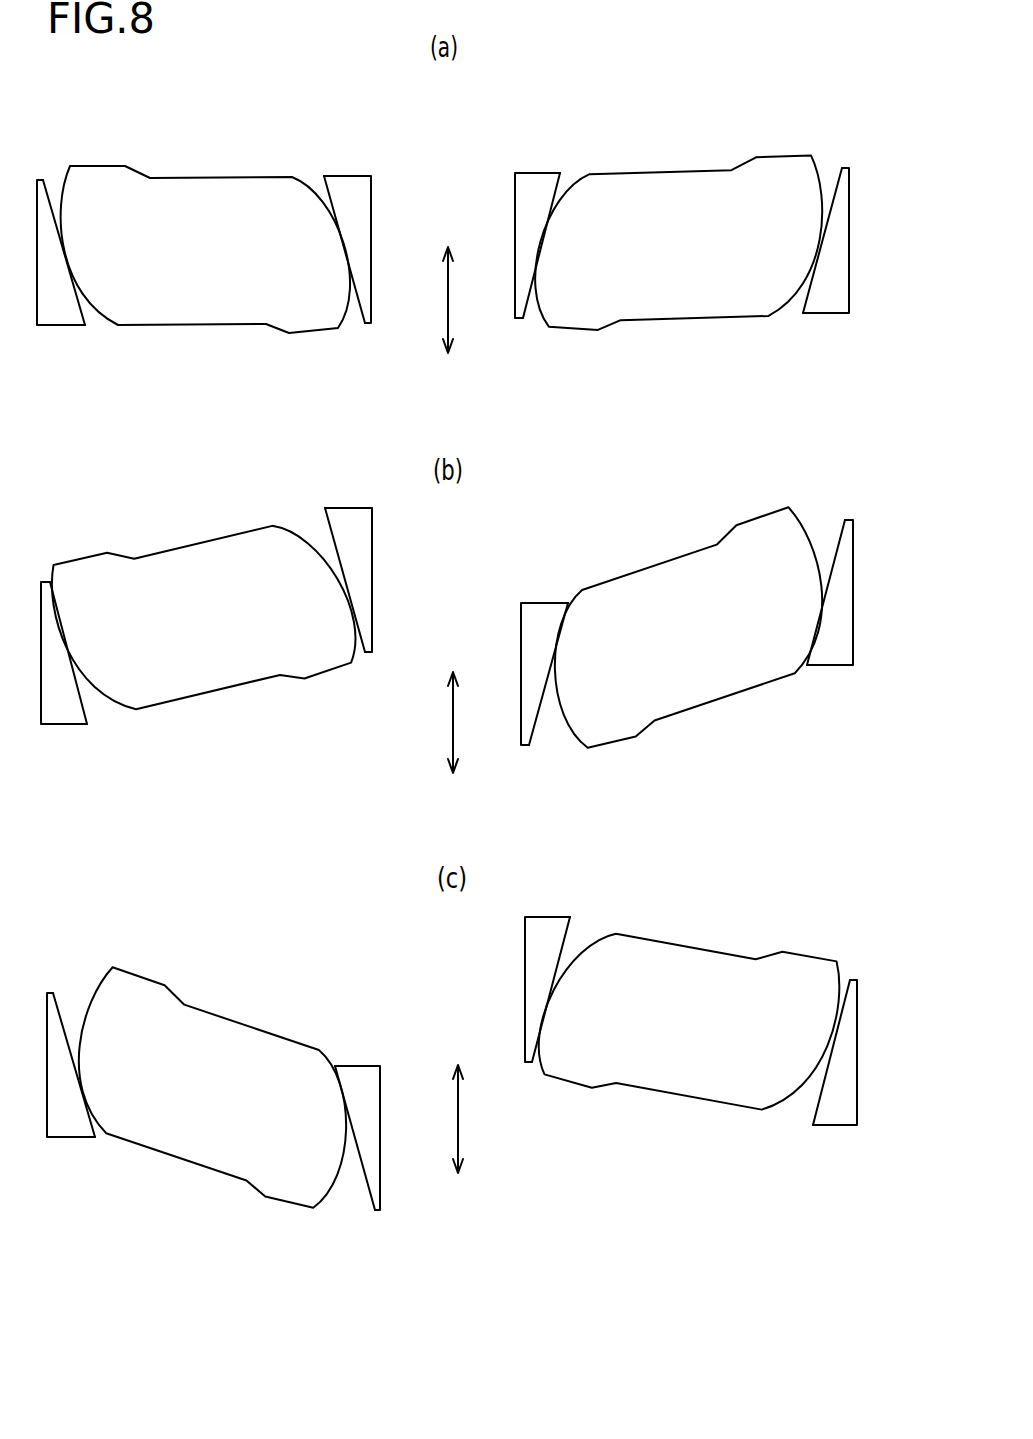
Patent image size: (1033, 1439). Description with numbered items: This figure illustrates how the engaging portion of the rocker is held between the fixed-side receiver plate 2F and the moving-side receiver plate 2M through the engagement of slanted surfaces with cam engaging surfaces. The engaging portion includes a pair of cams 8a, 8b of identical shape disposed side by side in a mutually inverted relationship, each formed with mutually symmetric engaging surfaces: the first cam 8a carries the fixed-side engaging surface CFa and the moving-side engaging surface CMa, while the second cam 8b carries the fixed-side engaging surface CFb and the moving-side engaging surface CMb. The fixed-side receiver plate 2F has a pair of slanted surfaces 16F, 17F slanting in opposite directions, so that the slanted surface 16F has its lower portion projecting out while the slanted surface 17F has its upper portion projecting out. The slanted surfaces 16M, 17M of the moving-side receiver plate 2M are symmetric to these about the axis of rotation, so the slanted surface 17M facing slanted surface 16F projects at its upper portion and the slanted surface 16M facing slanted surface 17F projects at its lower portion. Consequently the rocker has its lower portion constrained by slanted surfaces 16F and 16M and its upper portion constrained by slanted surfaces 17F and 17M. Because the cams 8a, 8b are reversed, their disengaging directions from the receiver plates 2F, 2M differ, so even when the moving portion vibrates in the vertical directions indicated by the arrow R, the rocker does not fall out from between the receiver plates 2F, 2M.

The fixed-side receiver plate 2F is at (52, 308).
The moving-side receiver plate 2M is at (353, 200).
The slanted surface of fixed-side receiver plate 16F is at (43, 183).
The slanted surface of moving-side receiver plate 17M is at (322, 190).
The slanted surface of fixed-side receiver plate 17F is at (568, 185).
The slanted surface of moving-side receiver plate 16M is at (838, 180).
The first cam 8a is at (212, 307).
The second cam 8b is at (680, 683).
The engaging surface CFa is at (97, 307).
The engaging surface CMa is at (347, 317).
The engaging surface CFb is at (540, 305).
The engaging surface CMb is at (783, 307).
The radial direction R is at (465, 710).